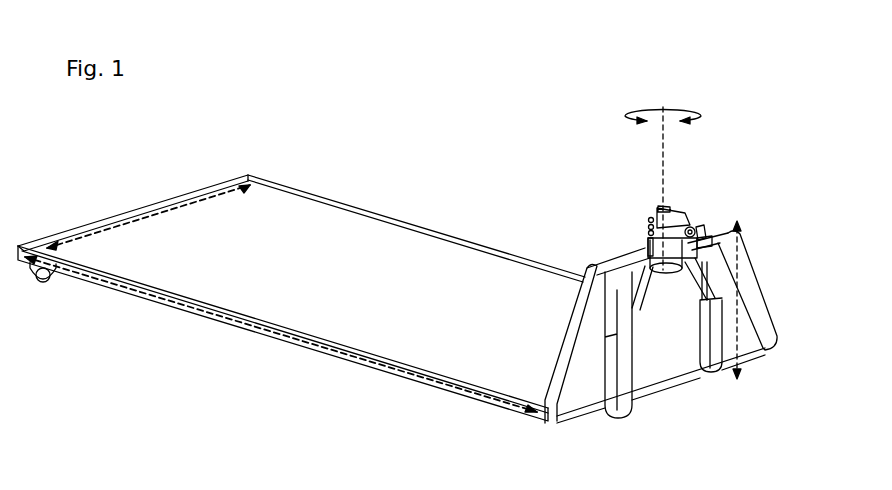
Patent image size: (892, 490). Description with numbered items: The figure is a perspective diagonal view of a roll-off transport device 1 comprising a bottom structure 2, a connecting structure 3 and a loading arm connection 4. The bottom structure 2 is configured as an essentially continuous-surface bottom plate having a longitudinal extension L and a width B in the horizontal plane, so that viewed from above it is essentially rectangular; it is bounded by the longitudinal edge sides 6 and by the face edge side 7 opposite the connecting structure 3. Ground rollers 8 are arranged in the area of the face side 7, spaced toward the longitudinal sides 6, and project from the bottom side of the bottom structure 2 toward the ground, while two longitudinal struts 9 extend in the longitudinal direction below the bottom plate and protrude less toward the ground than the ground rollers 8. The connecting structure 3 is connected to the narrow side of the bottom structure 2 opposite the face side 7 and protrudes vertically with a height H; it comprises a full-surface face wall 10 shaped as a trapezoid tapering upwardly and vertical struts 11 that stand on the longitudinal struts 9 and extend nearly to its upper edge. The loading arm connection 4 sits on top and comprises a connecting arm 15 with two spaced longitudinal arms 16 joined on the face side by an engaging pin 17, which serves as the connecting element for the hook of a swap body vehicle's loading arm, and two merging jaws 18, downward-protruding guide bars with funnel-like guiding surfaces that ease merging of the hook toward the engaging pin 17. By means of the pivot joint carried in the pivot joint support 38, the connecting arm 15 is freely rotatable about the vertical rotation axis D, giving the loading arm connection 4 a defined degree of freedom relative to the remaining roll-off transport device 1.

The roll-off transport device 1 is at (505, 80).
The bottom structure 2 is at (357, 330).
The connecting structure 3 is at (570, 378).
The loading arm connection 4 is at (703, 236).
The longitudinal edge sides 6 is at (383, 221).
The face edge side 7 is at (130, 214).
The ground rollers 8 is at (53, 282).
The longitudinal struts 9 is at (707, 378).
The face wall 10 is at (745, 330).
The vertical struts 11 is at (717, 350).
The connecting arm 15 is at (667, 221).
The longitudinal arms 16 is at (687, 222).
The engaging pin 17 is at (697, 229).
The merging jaws 18 is at (699, 246).
The pivot joint support 38 is at (648, 251).
The width B is at (168, 213).
The longitudinal extension L is at (230, 318).
The vertical rotation axis D is at (663, 178).
The height H is at (740, 249).